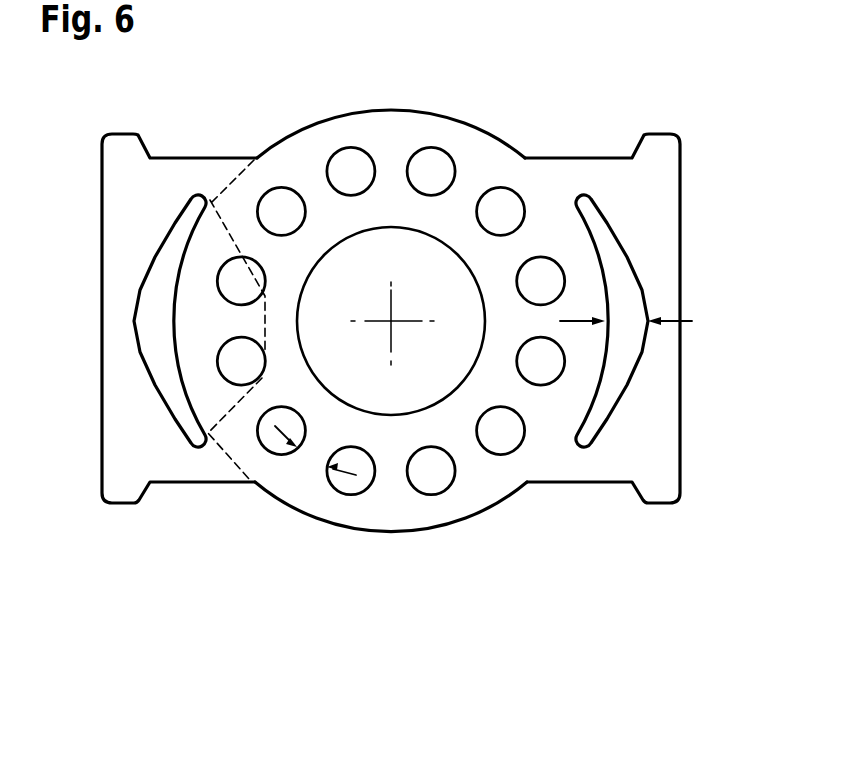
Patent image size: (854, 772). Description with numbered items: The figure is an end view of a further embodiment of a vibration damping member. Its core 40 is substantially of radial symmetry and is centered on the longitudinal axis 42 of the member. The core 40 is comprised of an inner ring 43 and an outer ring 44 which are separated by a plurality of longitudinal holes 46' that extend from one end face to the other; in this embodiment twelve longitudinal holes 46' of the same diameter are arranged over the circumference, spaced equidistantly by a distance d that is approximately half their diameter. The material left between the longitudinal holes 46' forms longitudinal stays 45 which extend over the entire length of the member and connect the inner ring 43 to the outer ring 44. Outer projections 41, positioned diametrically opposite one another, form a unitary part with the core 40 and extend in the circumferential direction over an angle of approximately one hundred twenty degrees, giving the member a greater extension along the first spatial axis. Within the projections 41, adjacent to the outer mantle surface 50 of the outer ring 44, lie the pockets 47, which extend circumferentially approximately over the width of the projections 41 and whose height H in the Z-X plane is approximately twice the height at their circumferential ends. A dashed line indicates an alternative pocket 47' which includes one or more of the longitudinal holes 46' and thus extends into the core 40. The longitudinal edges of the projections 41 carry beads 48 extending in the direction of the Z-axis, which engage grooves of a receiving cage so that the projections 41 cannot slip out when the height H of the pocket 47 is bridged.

The core 40 is at (467, 101).
The outer projections 41 is at (657, 408).
The longitudinal axis 42 is at (392, 320).
The inner ring 43 is at (338, 226).
The outer ring 44 is at (422, 291).
The longitudinal stays 45 is at (473, 462).
The longitudinal holes 46' is at (314, 501).
The pockets 47 is at (651, 321).
The pocket 47' is at (199, 281).
The beads 48 is at (653, 143).
The outer mantle surface 50 is at (510, 140).